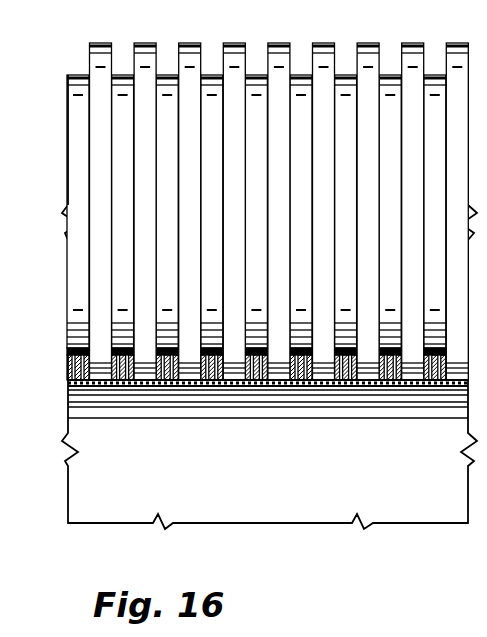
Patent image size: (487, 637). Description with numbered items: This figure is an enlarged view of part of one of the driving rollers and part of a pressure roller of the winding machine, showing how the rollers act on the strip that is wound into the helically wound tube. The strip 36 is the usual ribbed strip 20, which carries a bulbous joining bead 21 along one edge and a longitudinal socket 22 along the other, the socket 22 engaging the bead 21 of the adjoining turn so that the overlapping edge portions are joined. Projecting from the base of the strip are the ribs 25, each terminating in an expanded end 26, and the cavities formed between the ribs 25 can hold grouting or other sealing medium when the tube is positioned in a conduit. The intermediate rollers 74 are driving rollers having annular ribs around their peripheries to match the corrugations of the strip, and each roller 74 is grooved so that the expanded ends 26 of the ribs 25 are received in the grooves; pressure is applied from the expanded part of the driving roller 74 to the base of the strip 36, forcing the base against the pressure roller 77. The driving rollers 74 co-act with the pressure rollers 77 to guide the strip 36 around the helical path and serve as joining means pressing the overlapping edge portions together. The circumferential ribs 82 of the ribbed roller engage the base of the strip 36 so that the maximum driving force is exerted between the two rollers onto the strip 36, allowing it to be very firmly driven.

The circumferential ribs 82 is at (313, 43).
The intermediate rollers 74 is at (68, 121).
The expanded ends 26 is at (74, 336).
The strip 36 is at (66, 386).
The ribs 25 is at (142, 386).
The longitudinal socket 22 is at (184, 388).
The bulbous joining bead 21 is at (209, 388).
The ribbed strip 20 is at (409, 388).
The pressure rollers 77 is at (292, 473).